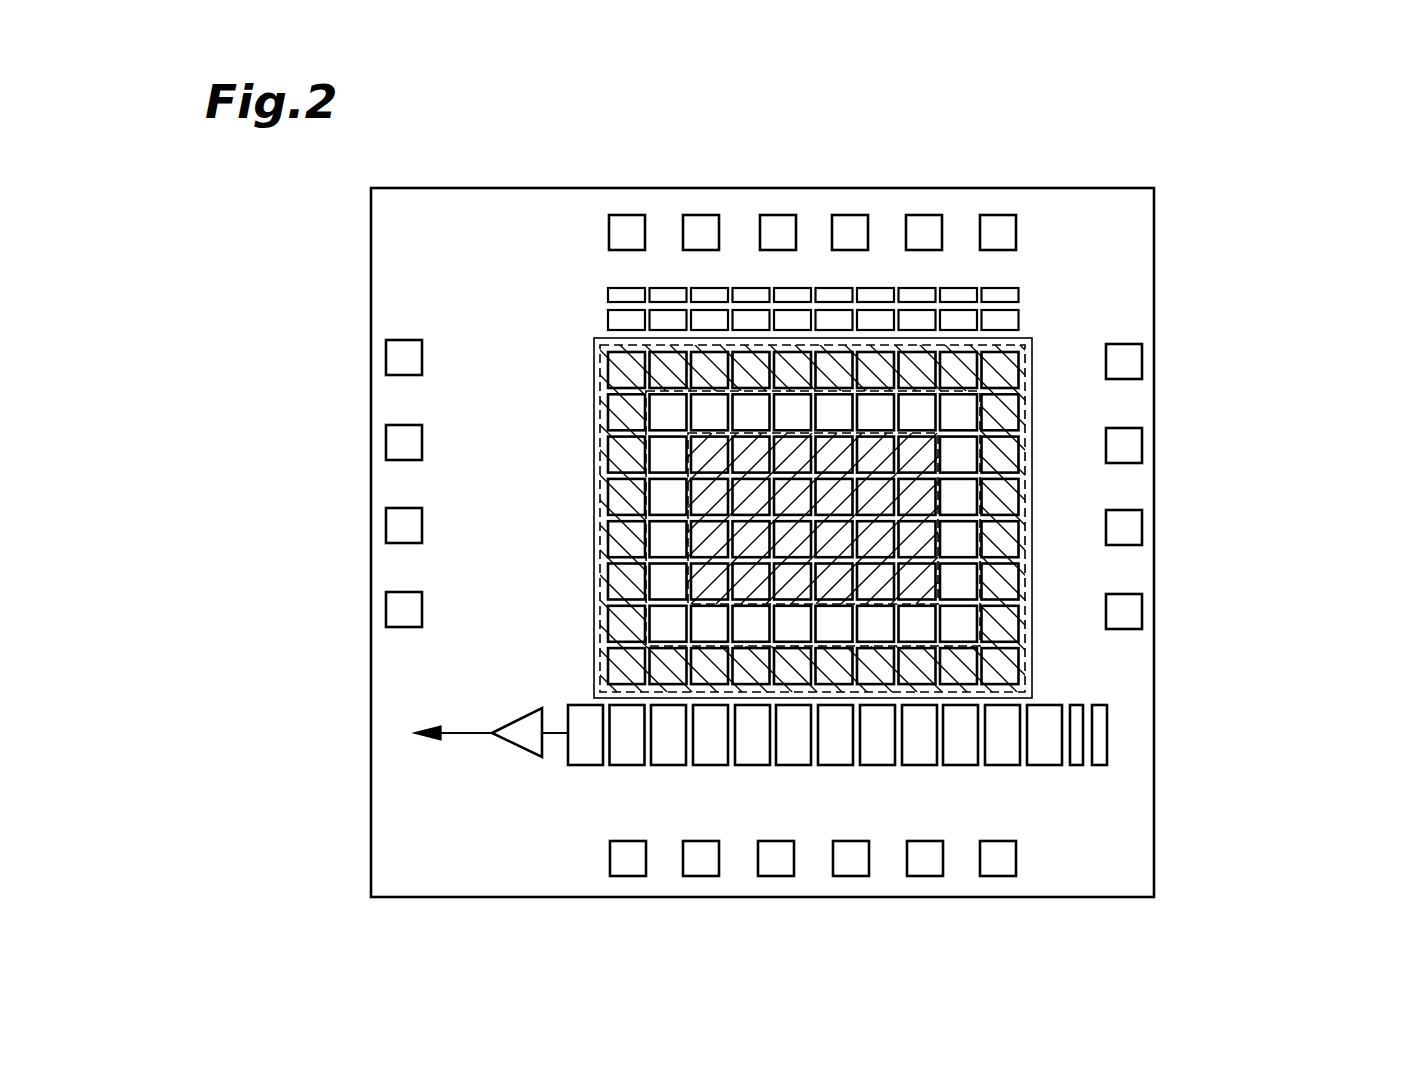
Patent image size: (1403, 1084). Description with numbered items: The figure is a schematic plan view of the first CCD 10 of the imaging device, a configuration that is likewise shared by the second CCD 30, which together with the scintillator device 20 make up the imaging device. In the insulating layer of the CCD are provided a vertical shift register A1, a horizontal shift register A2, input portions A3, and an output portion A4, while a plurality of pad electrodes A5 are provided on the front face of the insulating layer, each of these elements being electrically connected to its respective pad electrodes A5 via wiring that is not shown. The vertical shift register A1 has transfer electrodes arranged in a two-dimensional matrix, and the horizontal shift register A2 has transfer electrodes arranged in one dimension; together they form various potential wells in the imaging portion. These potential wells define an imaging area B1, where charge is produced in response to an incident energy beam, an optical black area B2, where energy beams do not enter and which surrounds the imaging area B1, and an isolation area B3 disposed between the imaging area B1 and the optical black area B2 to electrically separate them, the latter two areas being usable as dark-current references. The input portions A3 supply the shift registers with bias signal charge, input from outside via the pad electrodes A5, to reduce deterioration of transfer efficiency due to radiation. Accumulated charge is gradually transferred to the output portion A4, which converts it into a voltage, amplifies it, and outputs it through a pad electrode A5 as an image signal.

The first CCD 10 is at (865, 504).
The second CCD 30 is at (762, 542).
The scintillator device 20 is at (1034, 360).
The vertical shift register A1 is at (582, 402).
The horizontal shift register A2 is at (881, 778).
The input portion A3 is at (586, 300).
The output portion A4 is at (516, 750).
The pad electrode A5 is at (701, 215).
The imaging area B1 is at (836, 427).
The optical black area B2 is at (1036, 663).
The isolation area B3 is at (664, 491).